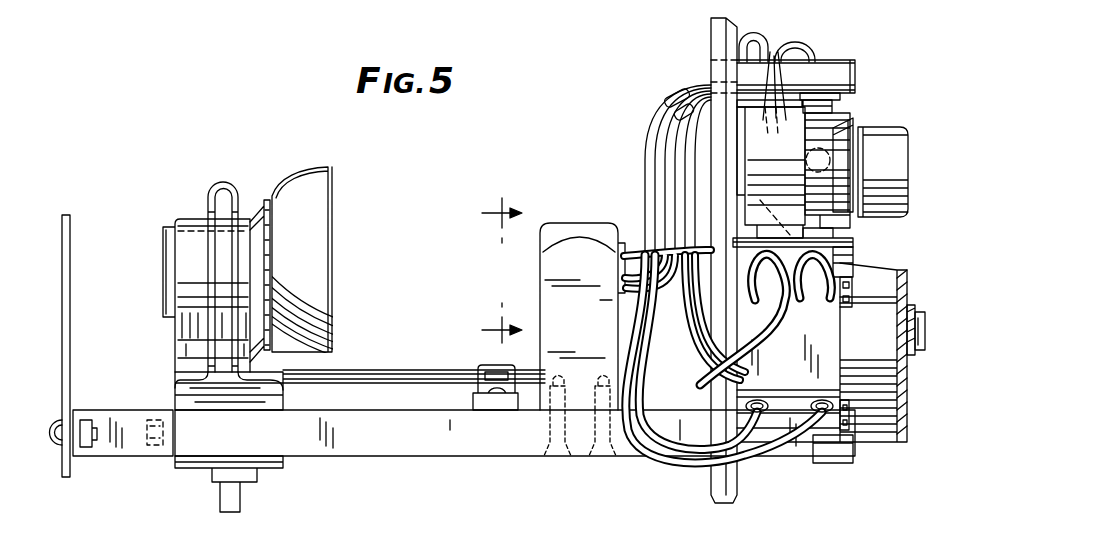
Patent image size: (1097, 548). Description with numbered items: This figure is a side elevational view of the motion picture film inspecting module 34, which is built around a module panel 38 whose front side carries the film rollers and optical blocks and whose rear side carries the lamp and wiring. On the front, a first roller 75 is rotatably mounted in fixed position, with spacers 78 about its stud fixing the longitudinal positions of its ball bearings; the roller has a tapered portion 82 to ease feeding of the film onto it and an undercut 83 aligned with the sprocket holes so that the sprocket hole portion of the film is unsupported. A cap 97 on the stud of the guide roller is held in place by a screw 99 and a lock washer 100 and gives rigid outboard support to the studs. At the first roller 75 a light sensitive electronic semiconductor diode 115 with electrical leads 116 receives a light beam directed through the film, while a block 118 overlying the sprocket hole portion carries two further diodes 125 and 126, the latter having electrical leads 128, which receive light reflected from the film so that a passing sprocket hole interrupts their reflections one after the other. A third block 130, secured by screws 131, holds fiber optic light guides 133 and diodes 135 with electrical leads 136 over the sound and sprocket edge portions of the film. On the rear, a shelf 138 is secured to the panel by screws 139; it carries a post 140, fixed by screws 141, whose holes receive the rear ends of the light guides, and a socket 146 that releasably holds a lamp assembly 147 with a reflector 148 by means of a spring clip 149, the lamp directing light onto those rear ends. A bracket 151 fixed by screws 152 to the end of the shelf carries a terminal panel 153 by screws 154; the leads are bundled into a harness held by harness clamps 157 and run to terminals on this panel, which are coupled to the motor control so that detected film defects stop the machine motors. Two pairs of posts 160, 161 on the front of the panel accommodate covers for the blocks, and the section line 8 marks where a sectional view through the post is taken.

The motion picture film inspecting module 34 is at (452, 479).
The module panel 38 is at (712, 44).
The section line 8- 8 is at (491, 270).
The first roller 75 is at (798, 165).
The spacers 78 is at (885, 130).
The tapered portion 82 is at (850, 123).
The undercut 83 is at (830, 164).
The cap 97 is at (900, 400).
The screw 99 is at (918, 318).
The lock washer 100 is at (905, 345).
The light sensitive electronic semiconductor diode 115 is at (790, 60).
The electrical leads 116 is at (753, 33).
The block 118 is at (848, 118).
The light sensitive electronic semiconductor diode 125 is at (848, 241).
The light sensitive electronic semiconductor diode 126 is at (822, 106).
The electrical leads 128 is at (805, 60).
The third block 130 is at (888, 350).
The screws 131 is at (853, 291).
The light transmitting fiber optic light guide 133 is at (800, 448).
The light sensitive electronic semiconductor diode 135 is at (753, 298).
The electrical leads 136 is at (772, 320).
The shelf 138 is at (497, 448).
The screws 139 is at (688, 378).
The post 140 is at (540, 296).
The screws 141 is at (579, 458).
The socket 146 is at (195, 389).
The lamp assembly 147 is at (183, 270).
The reflector 148 is at (322, 252).
The spring clip 149 is at (223, 183).
The bracket 151 is at (110, 447).
The screws 152 is at (152, 446).
The terminal panel 153 is at (70, 345).
The screws 154 is at (57, 446).
The harness clamps 157 is at (478, 400).
The posts 160 is at (836, 94).
The posts 161 is at (848, 263).